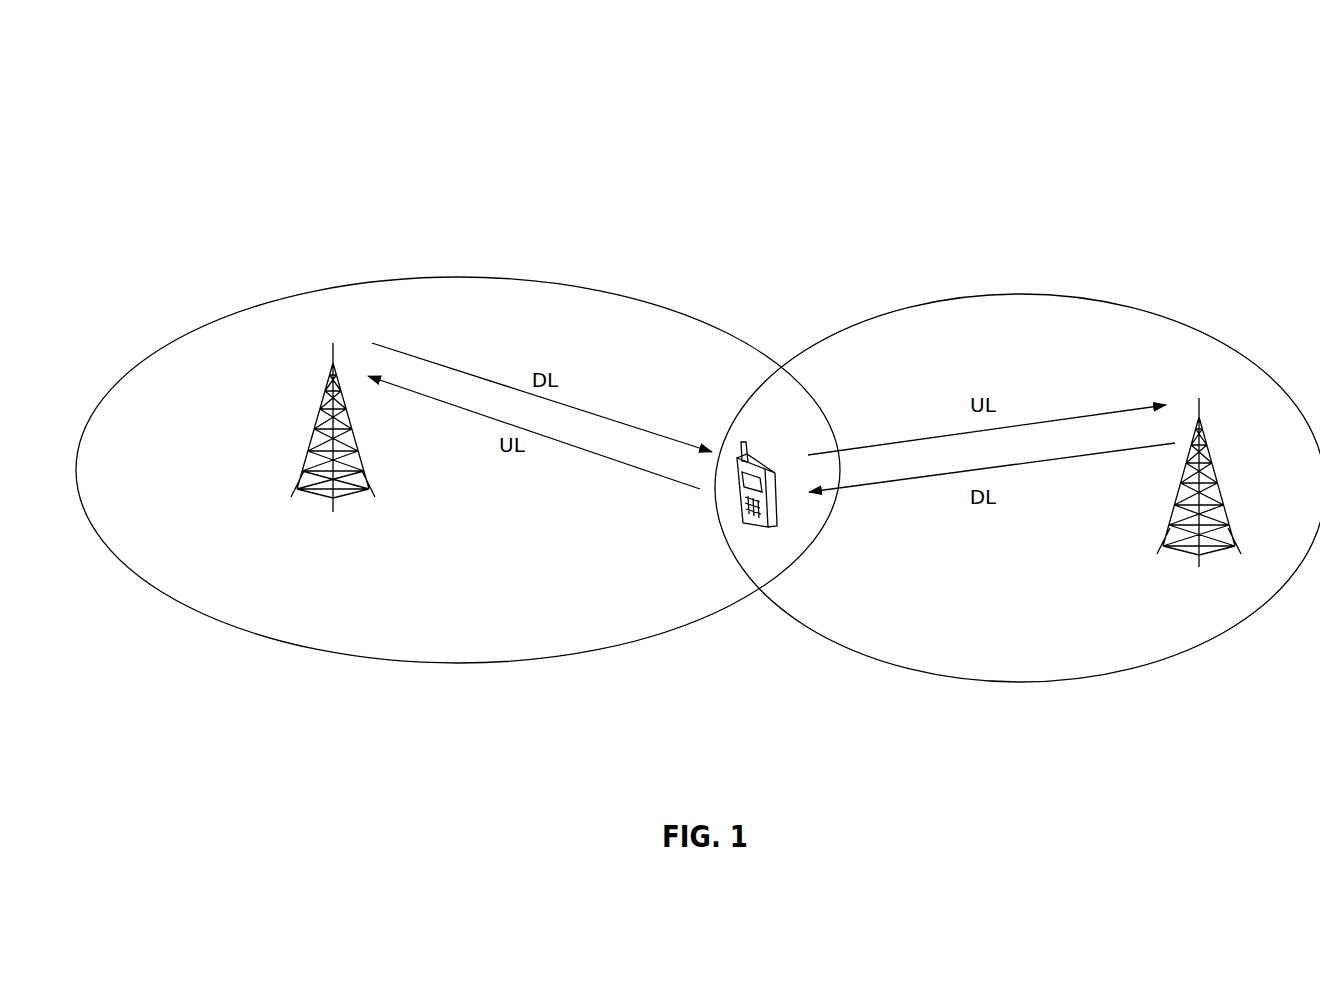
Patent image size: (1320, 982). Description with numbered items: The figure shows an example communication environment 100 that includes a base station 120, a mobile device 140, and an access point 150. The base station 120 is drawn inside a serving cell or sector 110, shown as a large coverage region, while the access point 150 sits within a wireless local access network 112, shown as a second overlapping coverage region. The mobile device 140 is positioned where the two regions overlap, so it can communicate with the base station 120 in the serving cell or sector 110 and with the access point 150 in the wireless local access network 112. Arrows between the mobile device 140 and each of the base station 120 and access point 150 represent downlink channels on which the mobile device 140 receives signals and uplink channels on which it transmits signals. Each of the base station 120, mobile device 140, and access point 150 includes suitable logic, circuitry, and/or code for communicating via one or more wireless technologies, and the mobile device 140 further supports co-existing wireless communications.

The communication environment 100 is at (1196, 94).
The serving cell or sector 110 is at (628, 295).
The wireless local access network 112 is at (1127, 304).
The base station 120 is at (333, 441).
The mobile device 140 is at (758, 498).
The access point 150 is at (1199, 495).